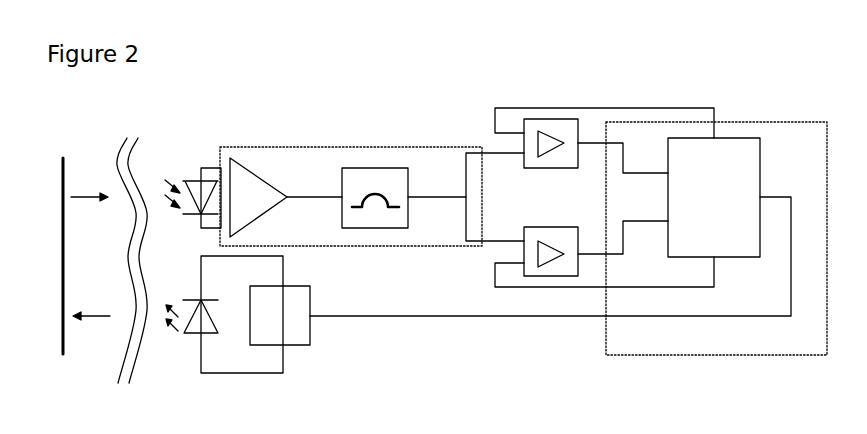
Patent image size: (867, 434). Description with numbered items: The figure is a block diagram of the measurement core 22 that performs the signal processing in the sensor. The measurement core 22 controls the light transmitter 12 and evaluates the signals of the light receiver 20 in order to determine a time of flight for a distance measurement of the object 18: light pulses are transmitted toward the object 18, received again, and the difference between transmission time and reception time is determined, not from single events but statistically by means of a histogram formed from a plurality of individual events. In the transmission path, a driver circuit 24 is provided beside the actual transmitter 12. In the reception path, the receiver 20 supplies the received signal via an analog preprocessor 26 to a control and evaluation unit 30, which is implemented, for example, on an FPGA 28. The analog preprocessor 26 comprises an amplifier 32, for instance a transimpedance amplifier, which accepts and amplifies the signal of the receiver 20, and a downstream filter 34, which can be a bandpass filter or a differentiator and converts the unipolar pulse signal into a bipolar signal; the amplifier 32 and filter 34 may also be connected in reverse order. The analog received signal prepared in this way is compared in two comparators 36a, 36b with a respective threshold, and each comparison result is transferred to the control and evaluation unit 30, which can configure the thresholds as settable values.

The light transmitter 12 is at (200, 337).
The object 18 is at (63, 335).
The light receiver 20 is at (186, 181).
The measurement core 22 is at (607, 62).
The driver circuit 24 is at (290, 345).
The analog preprocessor 26 is at (326, 147).
The FPGA 28 is at (745, 123).
The control and evaluation unit 30 is at (761, 177).
The amplifier 32 is at (250, 173).
The filter 34 is at (367, 168).
The comparator 36a is at (548, 128).
The comparator 36b is at (550, 276).